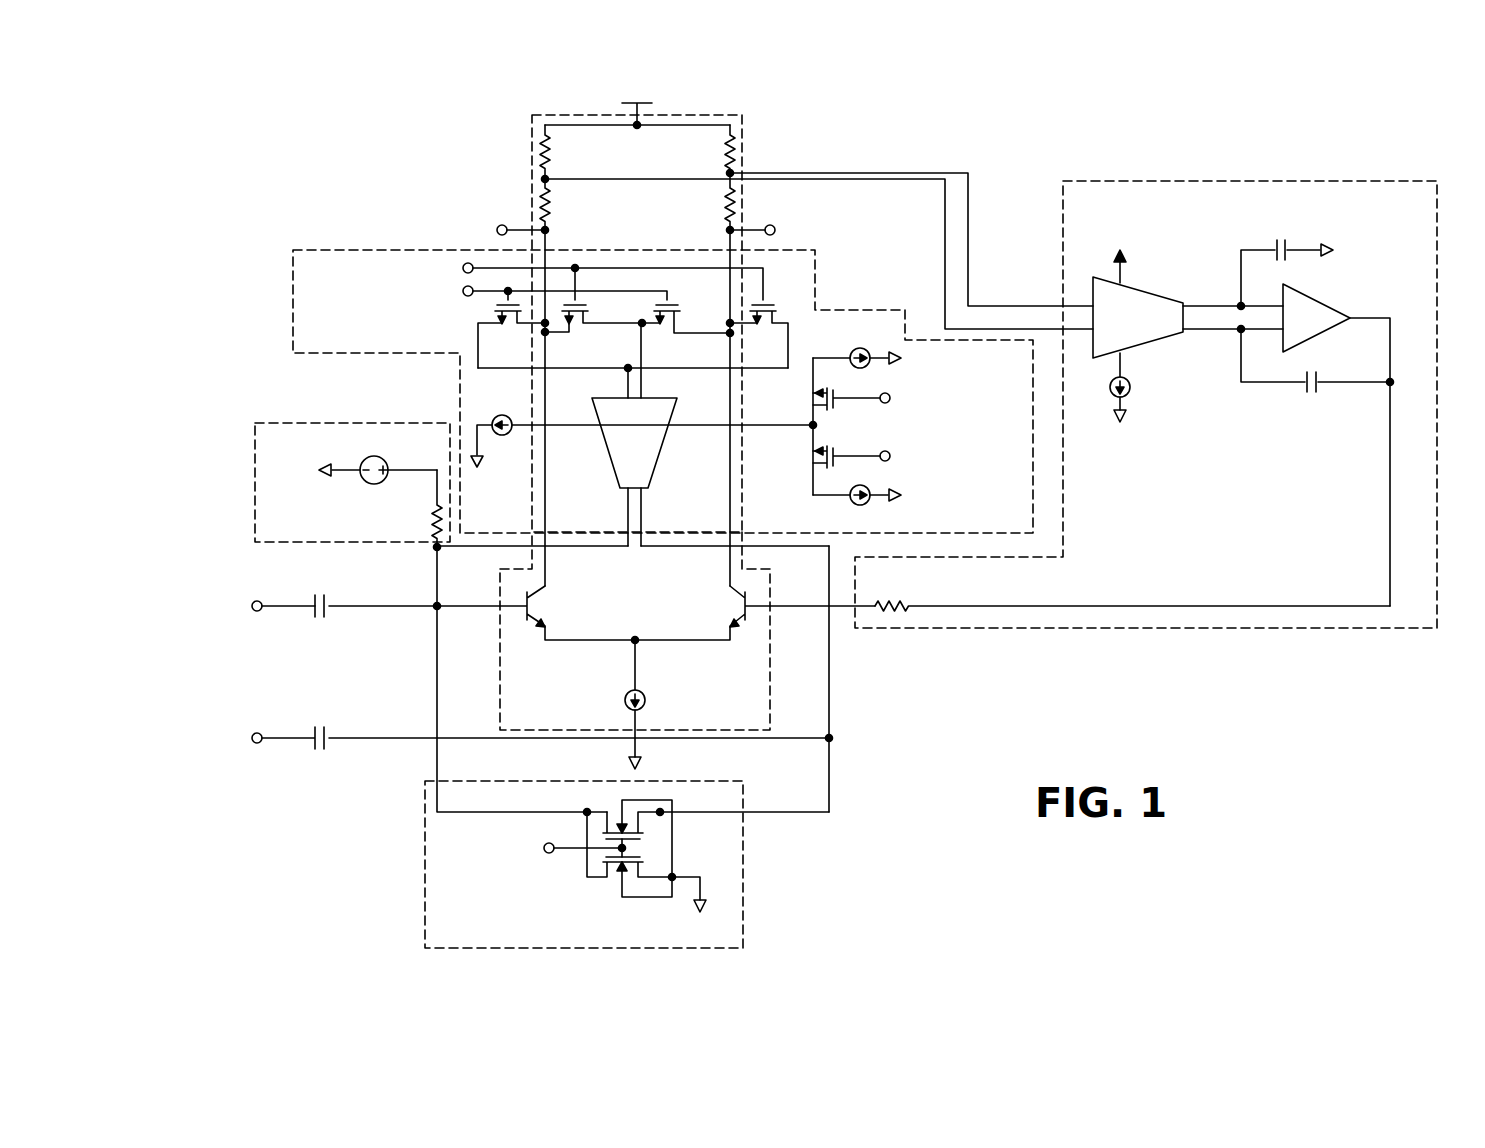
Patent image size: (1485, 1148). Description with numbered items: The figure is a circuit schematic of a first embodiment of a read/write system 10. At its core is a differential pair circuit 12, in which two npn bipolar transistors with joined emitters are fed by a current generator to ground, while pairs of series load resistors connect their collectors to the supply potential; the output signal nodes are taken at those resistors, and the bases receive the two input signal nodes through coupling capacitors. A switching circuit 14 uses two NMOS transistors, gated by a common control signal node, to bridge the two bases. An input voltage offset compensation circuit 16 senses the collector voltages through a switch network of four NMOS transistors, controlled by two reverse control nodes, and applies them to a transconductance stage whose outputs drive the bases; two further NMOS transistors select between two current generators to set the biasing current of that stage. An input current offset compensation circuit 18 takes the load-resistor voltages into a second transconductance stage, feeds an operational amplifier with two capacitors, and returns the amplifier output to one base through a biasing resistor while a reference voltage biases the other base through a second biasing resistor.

The read/write system 10 is at (343, 154).
The differential pair circuit 12 is at (558, 114).
The switching circuit 14 is at (425, 867).
The input voltage offset compensation circuit 16 is at (293, 301).
The input current offset compensation circuit 18 is at (255, 483).